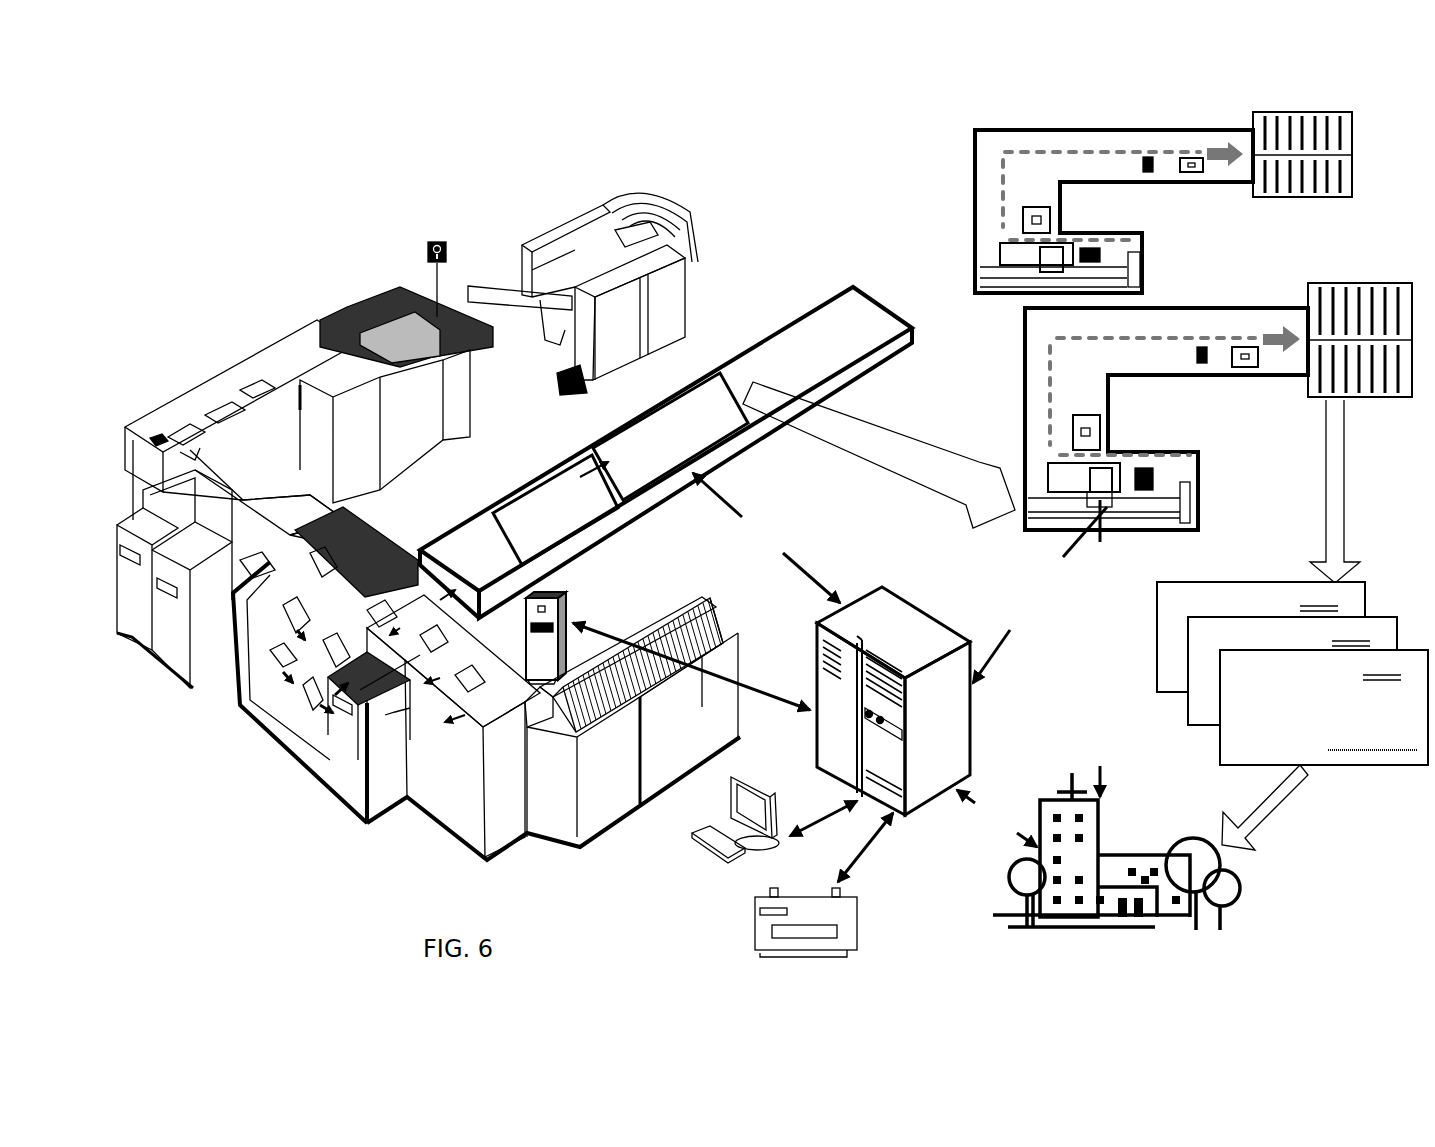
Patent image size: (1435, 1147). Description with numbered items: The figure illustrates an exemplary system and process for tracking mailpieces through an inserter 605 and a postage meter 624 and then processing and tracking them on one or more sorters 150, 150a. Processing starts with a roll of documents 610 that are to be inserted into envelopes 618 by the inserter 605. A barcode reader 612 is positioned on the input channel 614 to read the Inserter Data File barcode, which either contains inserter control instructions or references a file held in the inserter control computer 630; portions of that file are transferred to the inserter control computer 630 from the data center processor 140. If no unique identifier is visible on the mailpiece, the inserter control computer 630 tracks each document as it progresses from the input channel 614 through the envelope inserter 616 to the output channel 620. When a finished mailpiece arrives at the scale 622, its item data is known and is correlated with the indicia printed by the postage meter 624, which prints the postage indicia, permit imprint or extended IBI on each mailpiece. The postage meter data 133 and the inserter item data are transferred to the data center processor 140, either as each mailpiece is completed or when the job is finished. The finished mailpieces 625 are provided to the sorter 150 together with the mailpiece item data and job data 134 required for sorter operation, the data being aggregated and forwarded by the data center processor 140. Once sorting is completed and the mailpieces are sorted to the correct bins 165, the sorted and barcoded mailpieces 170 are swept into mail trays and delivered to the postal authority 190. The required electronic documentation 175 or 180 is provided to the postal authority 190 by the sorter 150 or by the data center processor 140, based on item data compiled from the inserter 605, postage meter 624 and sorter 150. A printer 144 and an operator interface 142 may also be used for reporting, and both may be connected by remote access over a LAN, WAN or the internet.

The inserter 605 is at (345, 222).
The roll of documents 610 is at (645, 212).
The barcode reader 612 is at (443, 250).
The input channel 614 is at (220, 370).
The envelope inserter 616 is at (263, 727).
The envelopes 618 is at (658, 637).
The output channel 620 is at (445, 523).
The scale 622 is at (548, 477).
The postage meter 624 is at (698, 380).
The finished mailpieces 625 is at (885, 435).
The inserter control computer 630 is at (570, 597).
The postage meter data 133 is at (706, 591).
The mailpiece item data and job data 134 is at (998, 603).
The data center processor 140 is at (917, 802).
The operator interface 142 is at (740, 822).
The printer 144 is at (755, 937).
The sorter 150 is at (1200, 300).
The sorter 150a is at (1002, 133).
The bins 165 is at (1318, 402).
The sorted and barcoded mailpieces 170 is at (1227, 582).
The electronic documentation 175 is at (1093, 677).
The electronic documentation 180 is at (997, 818).
The postal authority 190 is at (1130, 853).